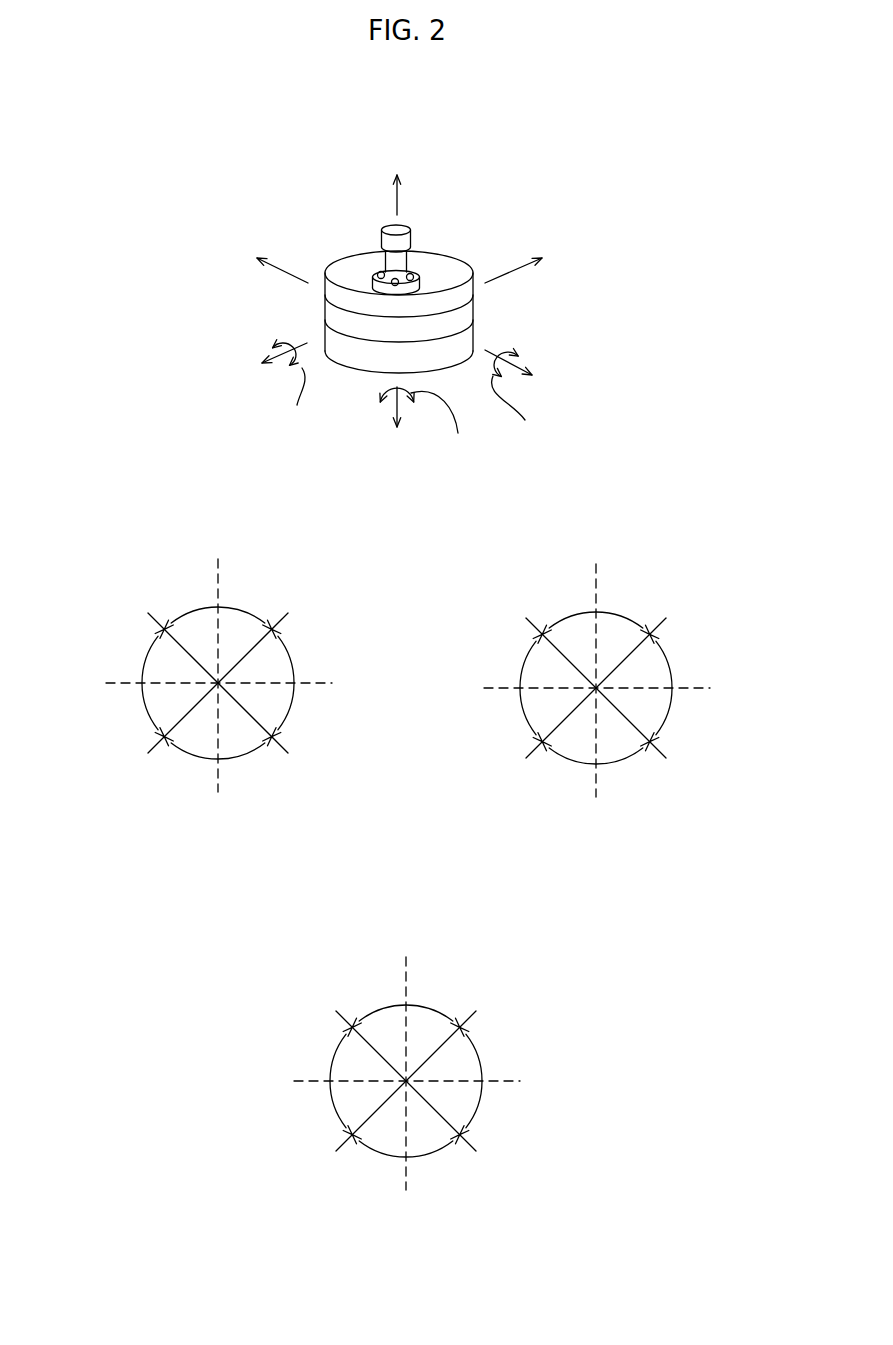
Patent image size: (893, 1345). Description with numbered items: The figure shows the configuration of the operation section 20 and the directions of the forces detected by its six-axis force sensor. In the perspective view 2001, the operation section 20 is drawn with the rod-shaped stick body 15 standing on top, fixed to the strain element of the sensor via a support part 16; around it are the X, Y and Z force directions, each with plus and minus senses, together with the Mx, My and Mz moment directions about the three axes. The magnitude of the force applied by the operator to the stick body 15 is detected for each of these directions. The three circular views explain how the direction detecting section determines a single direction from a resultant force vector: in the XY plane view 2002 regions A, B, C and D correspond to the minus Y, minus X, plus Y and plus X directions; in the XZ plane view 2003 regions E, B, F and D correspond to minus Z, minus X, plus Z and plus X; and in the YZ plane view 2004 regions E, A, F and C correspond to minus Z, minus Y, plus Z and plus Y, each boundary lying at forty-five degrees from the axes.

The directions of forces detected by the six-axis force sensor 2001 is at (263, 127).
The operation section 20 is at (510, 187).
The stick body 15 is at (411, 231).
The support part 16 is at (421, 272).
The XY plane view 2002 is at (132, 552).
The XZ plane view 2003 is at (540, 552).
The YZ plane view 2004 is at (325, 952).